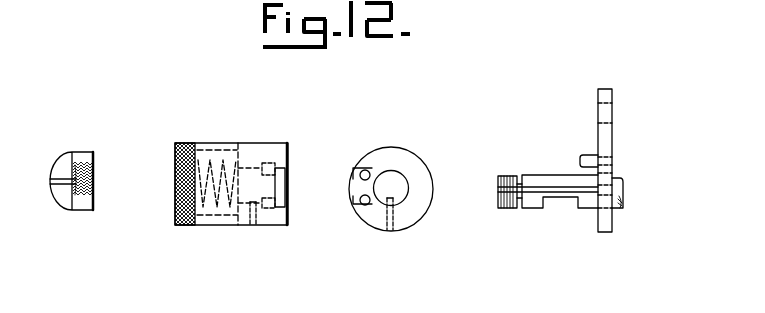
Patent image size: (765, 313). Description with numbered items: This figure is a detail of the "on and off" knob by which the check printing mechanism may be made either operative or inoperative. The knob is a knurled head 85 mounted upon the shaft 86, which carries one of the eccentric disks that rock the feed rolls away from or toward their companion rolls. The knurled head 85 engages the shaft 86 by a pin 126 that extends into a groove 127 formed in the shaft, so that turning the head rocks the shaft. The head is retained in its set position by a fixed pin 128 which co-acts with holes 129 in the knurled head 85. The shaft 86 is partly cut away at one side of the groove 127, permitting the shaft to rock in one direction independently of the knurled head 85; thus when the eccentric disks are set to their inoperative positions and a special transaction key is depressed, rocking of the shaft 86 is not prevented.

The knurled head 85 is at (213, 143).
The pin 126 is at (248, 222).
The holes 129 is at (359, 197).
The groove 127 is at (545, 186).
The fixed pin 128 is at (585, 160).
The shaft 86 is at (617, 178).